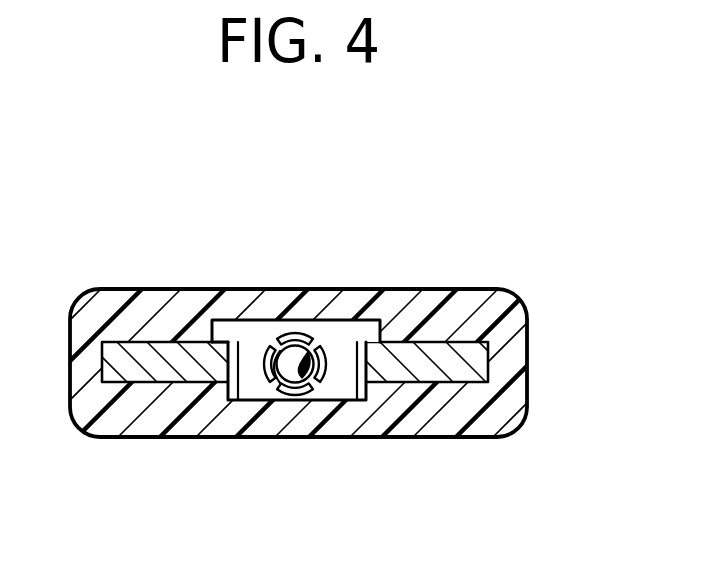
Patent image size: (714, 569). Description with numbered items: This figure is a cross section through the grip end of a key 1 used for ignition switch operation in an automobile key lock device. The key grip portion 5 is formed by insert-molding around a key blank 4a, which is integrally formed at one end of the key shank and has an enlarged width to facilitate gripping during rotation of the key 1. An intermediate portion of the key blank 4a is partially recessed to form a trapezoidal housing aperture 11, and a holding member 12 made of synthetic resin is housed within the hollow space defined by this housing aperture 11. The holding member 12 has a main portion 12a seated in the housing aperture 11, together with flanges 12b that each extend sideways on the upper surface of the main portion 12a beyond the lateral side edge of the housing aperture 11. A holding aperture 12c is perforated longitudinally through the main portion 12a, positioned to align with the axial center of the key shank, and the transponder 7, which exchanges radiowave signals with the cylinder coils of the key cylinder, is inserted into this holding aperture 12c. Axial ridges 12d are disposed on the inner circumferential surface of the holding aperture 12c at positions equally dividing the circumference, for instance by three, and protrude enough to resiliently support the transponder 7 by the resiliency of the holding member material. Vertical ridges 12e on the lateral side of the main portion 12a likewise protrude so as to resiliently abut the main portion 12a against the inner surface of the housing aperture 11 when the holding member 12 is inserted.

The key 1 is at (519, 221).
The key grip portion 5 is at (500, 290).
The key blank 4a is at (142, 342).
The transponder 7 is at (295, 334).
The housing aperture 11 is at (347, 342).
The holding member 12 is at (337, 321).
The main portion 12a is at (345, 392).
The flange 12b is at (205, 335).
The holding aperture 12c is at (277, 385).
The axial ridge 12d is at (283, 372).
The vertical ridge 12e is at (203, 382).